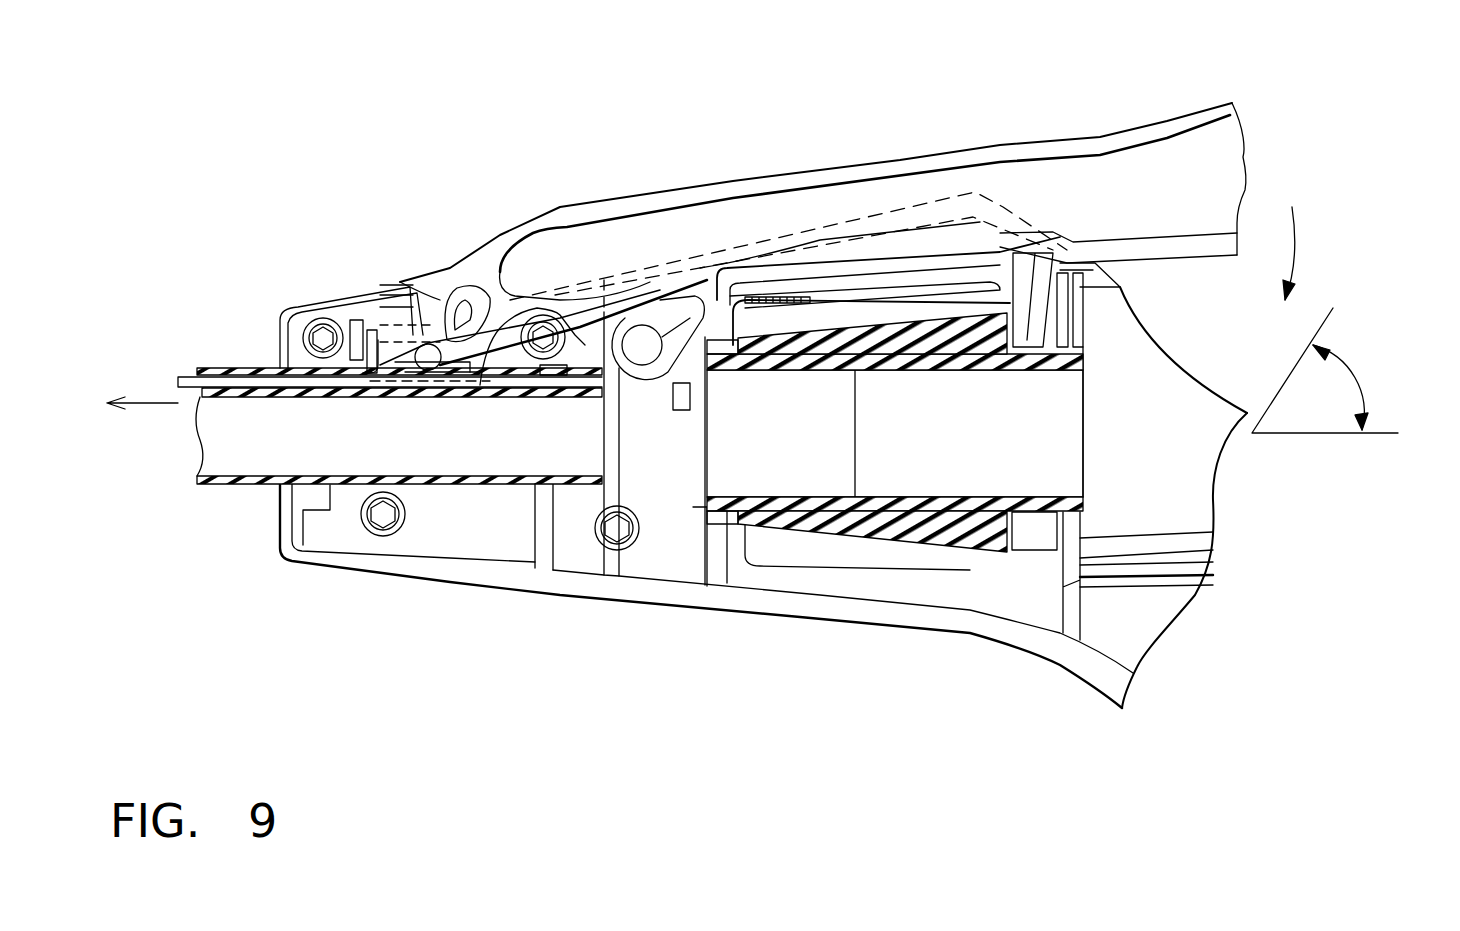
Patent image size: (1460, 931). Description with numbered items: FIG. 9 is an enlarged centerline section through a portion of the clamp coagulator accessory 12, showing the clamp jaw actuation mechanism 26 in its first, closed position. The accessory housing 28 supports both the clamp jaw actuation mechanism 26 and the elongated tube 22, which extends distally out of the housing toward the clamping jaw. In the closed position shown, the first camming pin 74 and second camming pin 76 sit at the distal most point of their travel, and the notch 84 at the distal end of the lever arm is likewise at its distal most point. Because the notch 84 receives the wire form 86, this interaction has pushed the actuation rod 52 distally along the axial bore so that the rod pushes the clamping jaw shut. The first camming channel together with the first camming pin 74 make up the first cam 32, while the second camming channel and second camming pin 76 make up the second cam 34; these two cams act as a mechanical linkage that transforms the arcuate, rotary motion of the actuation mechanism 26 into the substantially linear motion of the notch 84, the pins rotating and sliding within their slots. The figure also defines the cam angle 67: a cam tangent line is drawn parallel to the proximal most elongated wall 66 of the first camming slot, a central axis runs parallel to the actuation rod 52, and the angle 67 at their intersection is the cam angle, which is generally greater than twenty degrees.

The clamp coagulator accessory 12 is at (576, 148).
The elongated tube 22 is at (253, 485).
The clamp jaw actuation mechanism 26 is at (905, 150).
The accessory housing 28 is at (693, 614).
The first cam 32 is at (622, 312).
The second cam 34 is at (405, 320).
The actuation rod 52 is at (188, 373).
The proximal most elongated wall 66 is at (685, 372).
The cam angle 67 is at (1350, 380).
The first camming pin 74 is at (643, 378).
The second camming pin 76 is at (413, 387).
The notch 84 is at (307, 298).
The wire form 86 is at (373, 376).